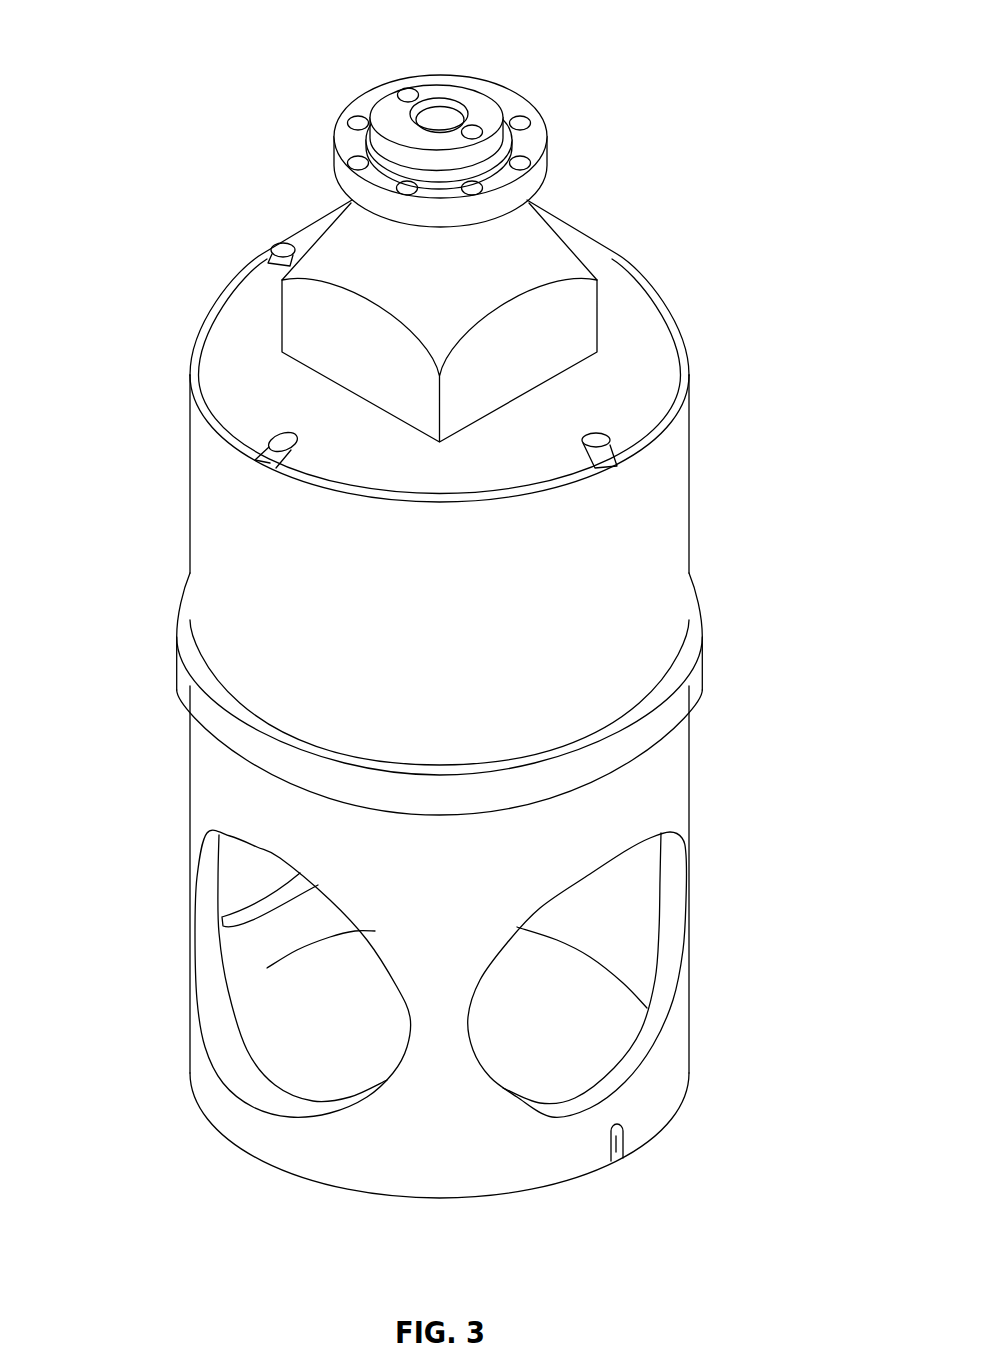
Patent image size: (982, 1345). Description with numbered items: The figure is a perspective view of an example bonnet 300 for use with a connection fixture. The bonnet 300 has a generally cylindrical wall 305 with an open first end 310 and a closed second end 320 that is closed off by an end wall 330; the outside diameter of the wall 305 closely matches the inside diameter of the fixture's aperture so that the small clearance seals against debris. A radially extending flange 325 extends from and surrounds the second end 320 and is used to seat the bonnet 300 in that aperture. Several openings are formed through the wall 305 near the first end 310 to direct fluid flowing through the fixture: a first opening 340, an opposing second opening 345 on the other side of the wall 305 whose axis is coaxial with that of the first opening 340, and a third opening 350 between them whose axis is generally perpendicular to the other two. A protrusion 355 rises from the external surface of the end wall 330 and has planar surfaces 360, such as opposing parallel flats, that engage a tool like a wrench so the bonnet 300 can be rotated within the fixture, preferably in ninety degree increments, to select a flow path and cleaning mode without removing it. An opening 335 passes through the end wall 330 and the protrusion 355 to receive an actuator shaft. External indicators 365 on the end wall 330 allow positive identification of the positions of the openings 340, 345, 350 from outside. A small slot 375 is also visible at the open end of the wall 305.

The bonnet 300 is at (180, 152).
The cylindrical wall 305 is at (663, 785).
The open first end 310 is at (258, 1168).
The closed second end 320 is at (626, 244).
The radially extending flange 325 is at (190, 687).
The end wall 330 is at (228, 346).
The opening 335 is at (440, 113).
The first opening 340 is at (234, 897).
The second opening 345 is at (598, 1083).
The third opening 350 is at (281, 1083).
The protrusion 355 is at (360, 250).
The planar surfaces 360 is at (313, 320).
The external indicators 365 is at (272, 250).
The bottom slot 375 is at (620, 1138).